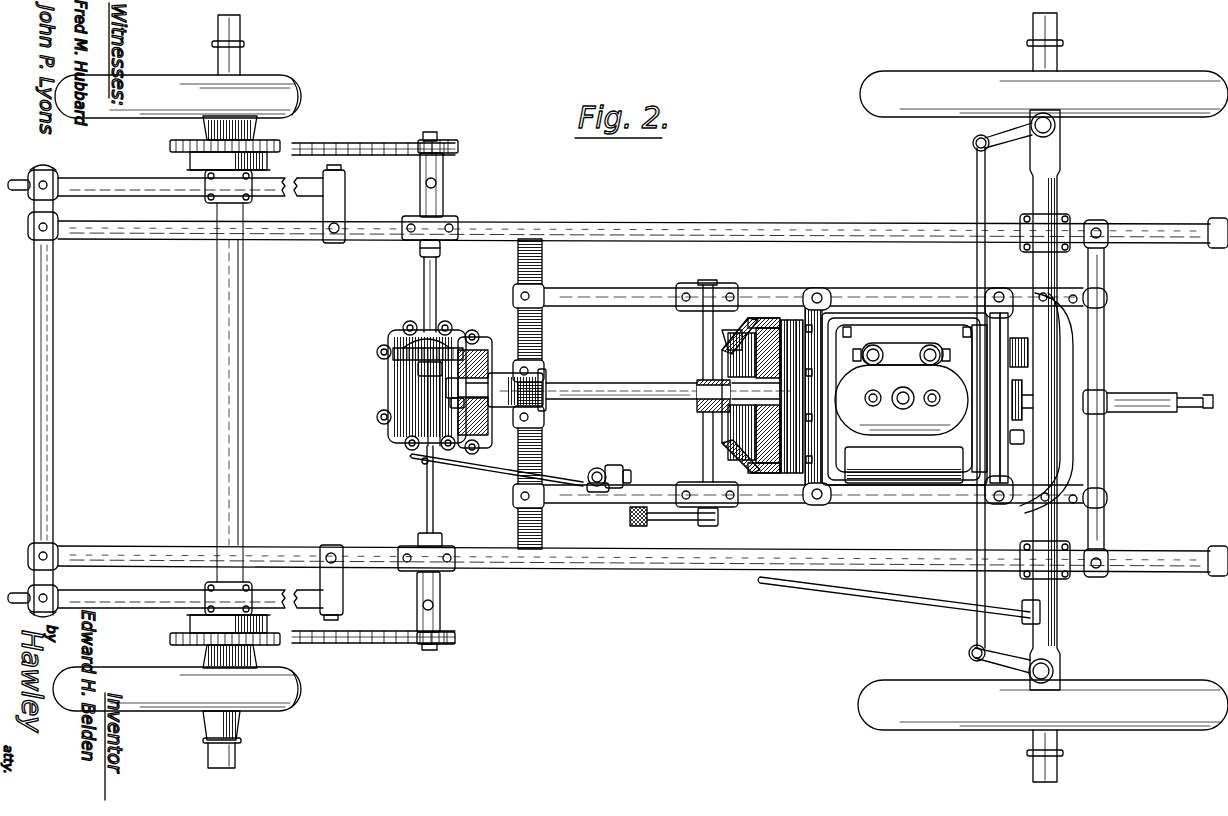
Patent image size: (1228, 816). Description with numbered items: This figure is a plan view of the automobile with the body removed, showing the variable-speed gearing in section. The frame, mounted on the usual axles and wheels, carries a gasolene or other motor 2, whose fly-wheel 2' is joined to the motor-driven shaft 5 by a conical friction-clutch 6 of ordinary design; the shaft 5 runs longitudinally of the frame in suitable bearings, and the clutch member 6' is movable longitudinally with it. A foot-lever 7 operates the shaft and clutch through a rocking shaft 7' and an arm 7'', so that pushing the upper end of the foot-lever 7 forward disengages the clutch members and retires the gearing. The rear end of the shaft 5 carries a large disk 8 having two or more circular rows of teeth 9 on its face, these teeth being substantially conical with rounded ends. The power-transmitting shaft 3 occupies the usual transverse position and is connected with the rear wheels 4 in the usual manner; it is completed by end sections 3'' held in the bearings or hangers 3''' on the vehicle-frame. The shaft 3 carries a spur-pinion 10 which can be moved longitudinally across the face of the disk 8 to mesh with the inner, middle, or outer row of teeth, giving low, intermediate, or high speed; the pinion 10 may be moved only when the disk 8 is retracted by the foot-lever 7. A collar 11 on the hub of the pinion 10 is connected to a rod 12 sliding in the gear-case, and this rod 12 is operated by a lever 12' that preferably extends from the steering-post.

The motor 2 is at (904, 399).
The motor fly-wheel 2' is at (784, 381).
The power-transmitting shaft 3 is at (422, 402).
The end sections 3'' is at (416, 253).
The bearings or hangers 3''' is at (436, 391).
The rear wheels 4 is at (177, 393).
The motor-driven shaft 5 is at (592, 390).
The conical friction-clutch 6 is at (751, 394).
The clutch member 6' is at (711, 351).
The foot-lever 7 is at (674, 527).
The rocking shaft 7' is at (695, 447).
The arm 7'' is at (696, 398).
The disk 8 is at (478, 350).
The disk-teeth 9 is at (462, 388).
The spur-pinion 10 is at (412, 330).
The collar 11 is at (455, 371).
The rod 12 is at (413, 404).
The lever 12' is at (520, 472).